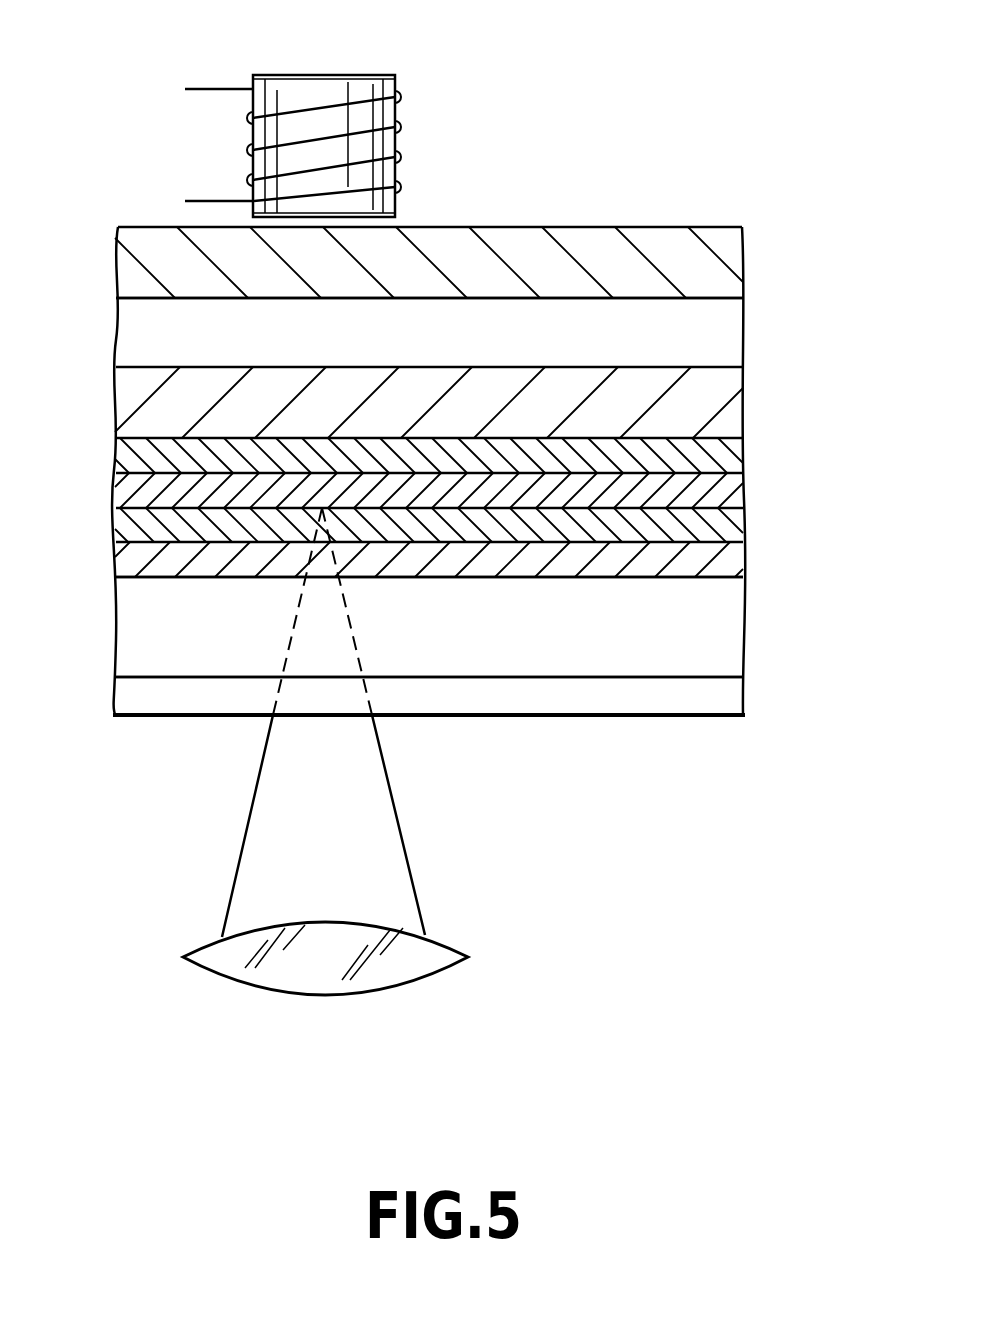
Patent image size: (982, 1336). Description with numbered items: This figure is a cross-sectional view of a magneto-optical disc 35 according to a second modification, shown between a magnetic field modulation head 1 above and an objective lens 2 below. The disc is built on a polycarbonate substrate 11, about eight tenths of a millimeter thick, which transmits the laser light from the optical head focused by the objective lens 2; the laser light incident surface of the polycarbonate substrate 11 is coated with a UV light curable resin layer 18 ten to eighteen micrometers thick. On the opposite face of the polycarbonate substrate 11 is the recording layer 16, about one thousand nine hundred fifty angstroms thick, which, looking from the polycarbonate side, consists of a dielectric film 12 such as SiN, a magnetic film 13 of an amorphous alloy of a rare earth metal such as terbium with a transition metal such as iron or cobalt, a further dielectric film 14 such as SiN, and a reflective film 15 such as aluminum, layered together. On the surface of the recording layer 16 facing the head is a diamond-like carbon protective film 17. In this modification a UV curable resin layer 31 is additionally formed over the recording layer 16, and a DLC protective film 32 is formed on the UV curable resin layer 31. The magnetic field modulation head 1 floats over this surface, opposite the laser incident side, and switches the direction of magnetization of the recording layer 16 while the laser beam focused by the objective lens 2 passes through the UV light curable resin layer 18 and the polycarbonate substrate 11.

The magnetic field modulation head 1 is at (333, 73).
The objective lens 2 is at (390, 970).
The magneto-optical disc 35 is at (610, 193).
The DLC protective film 32 is at (733, 266).
The UV curable resin layer 31 is at (726, 340).
The DLC protective film 17 is at (730, 405).
The recording layer 16 is at (521, 512).
The reflective film 15 is at (728, 457).
The dielectric film 14 is at (728, 495).
The magnetic film 13 is at (728, 537).
The dielectric film 12 is at (483, 568).
The polycarbonate substrate 11 is at (723, 640).
The UV light curable resin layer 18 is at (728, 697).